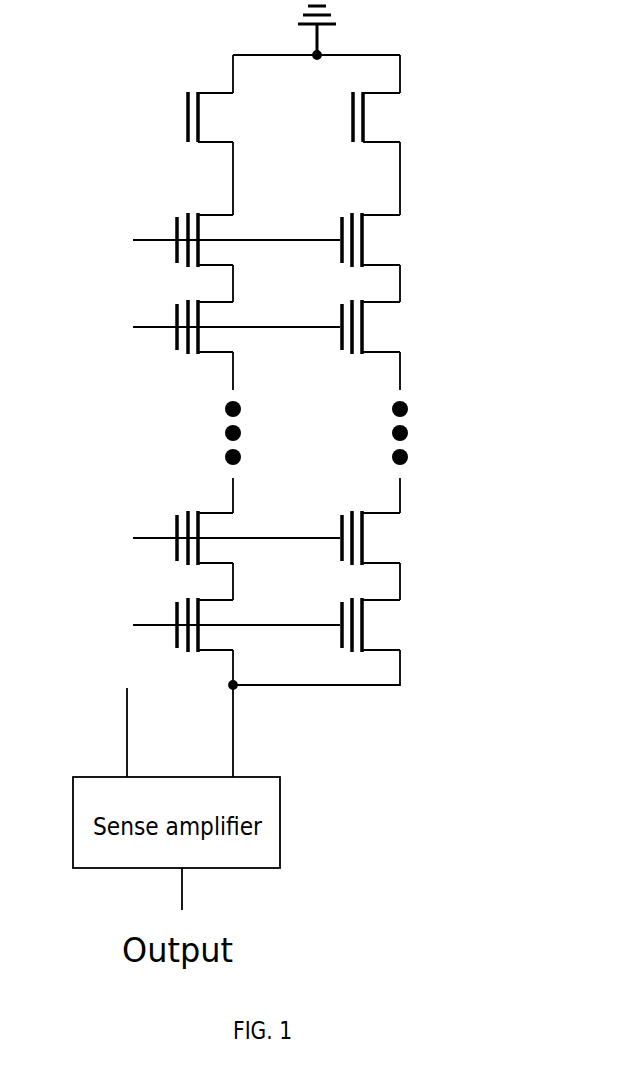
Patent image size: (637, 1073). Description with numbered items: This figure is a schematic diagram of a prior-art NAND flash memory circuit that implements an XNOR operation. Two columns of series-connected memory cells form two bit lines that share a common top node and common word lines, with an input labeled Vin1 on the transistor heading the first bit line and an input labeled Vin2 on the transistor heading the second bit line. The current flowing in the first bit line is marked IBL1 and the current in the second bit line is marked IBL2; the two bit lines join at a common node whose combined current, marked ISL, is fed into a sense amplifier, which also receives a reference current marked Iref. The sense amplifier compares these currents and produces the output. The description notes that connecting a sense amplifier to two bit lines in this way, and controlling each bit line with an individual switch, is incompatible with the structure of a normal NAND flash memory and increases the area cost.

The first input voltage transistor Vin1 is at (188, 117).
The second input voltage transistor Vin2 is at (353, 117).
The first bit line current IBL1 is at (222, 656).
The second bit line current IBL2 is at (417, 654).
The reference current Iref is at (108, 721).
The source line current ISL is at (252, 721).